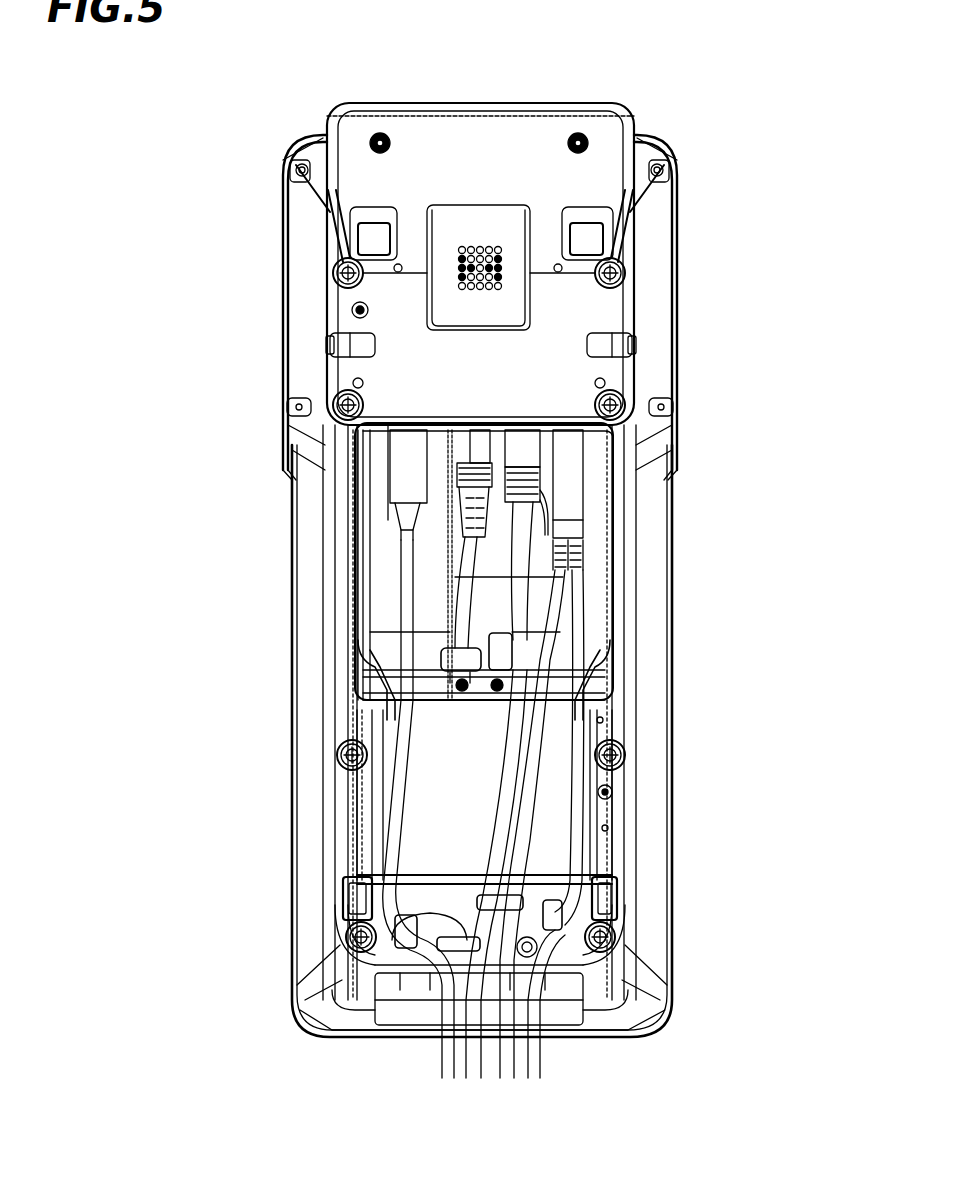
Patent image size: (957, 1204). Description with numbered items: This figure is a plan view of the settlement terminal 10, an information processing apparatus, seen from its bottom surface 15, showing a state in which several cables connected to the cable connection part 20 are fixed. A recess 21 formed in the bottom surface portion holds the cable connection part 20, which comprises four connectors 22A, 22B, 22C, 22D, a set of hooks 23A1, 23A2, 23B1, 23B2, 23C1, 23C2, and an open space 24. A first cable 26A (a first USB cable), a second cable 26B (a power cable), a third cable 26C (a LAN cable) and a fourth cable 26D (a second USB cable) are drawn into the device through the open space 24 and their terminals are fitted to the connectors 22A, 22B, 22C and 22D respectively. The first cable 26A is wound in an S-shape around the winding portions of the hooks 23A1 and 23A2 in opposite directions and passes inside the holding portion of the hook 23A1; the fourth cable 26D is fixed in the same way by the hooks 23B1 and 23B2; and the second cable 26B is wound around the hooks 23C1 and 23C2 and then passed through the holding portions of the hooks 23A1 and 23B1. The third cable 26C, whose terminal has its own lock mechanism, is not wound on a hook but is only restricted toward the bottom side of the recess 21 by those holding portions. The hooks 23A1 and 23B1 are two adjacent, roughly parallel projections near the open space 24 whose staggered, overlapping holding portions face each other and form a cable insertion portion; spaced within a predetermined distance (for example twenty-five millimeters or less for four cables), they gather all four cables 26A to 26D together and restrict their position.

The display device 10 is at (483, 104).
The bottom surface 15 is at (600, 304).
The cable connection part 20 is at (375, 588).
The recess 21 is at (378, 545).
The connector 22A is at (405, 432).
The connector 22B is at (470, 455).
The connector 22C is at (560, 450).
The connector 22D is at (532, 462).
The hook 23A1 is at (395, 905).
The hook 23A2 is at (395, 925).
The hook 23B1 is at (553, 895).
The hook 23B2 is at (563, 905).
The hook 23C1 is at (460, 670).
The hook 23C2 is at (503, 641).
The open space 24 is at (425, 985).
The first cable 26A is at (405, 650).
The second cable 26B is at (495, 820).
The third cable 26C is at (522, 785).
The fourth cable 26D is at (577, 818).